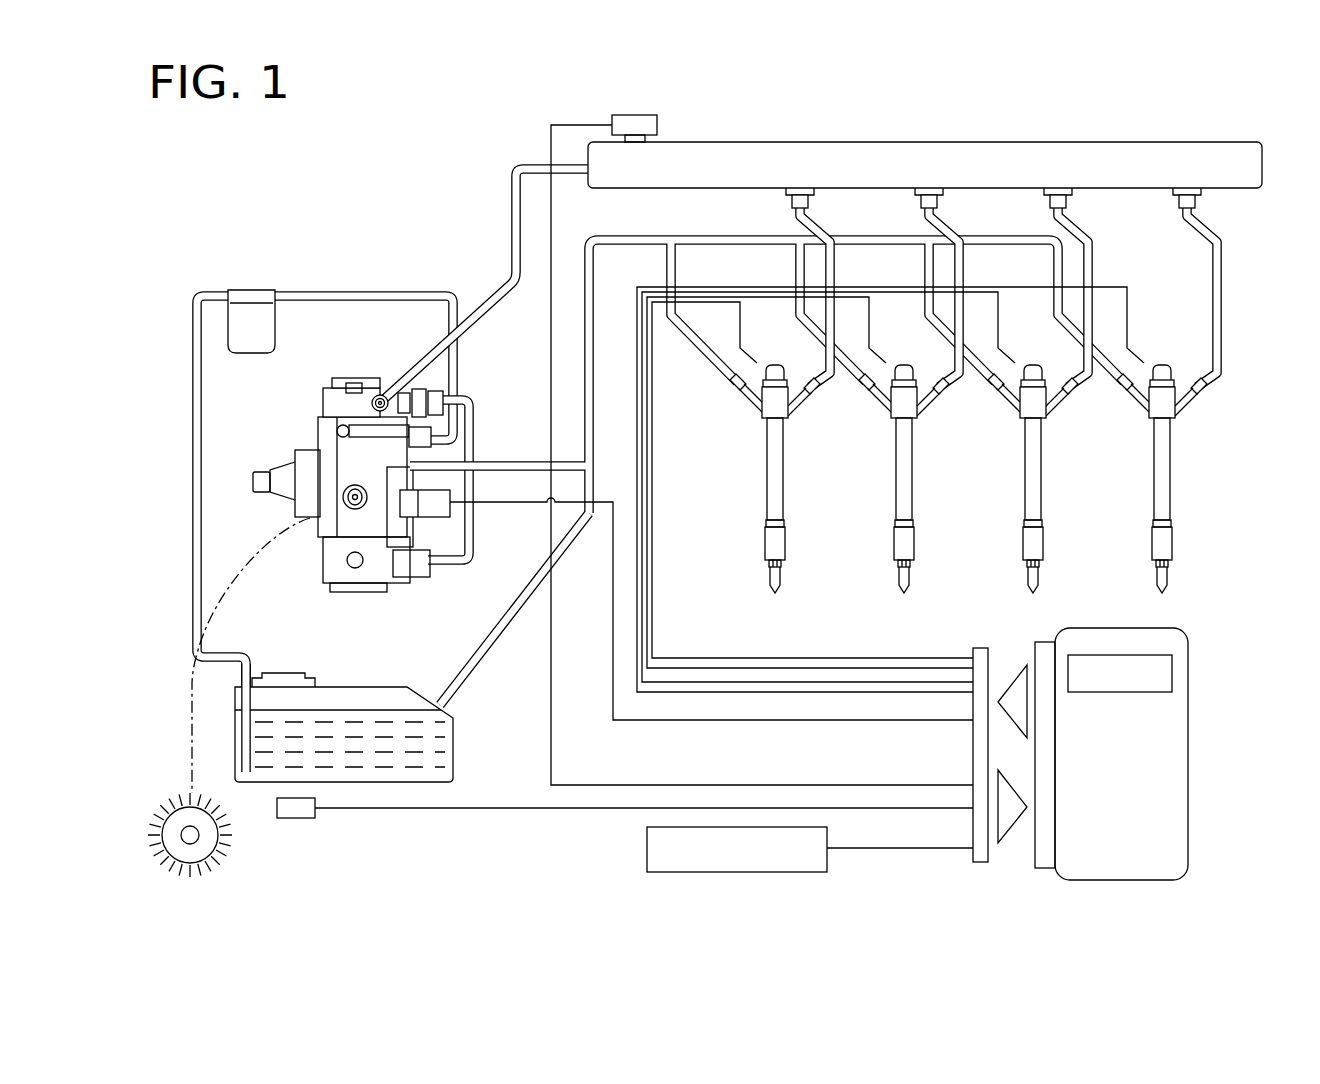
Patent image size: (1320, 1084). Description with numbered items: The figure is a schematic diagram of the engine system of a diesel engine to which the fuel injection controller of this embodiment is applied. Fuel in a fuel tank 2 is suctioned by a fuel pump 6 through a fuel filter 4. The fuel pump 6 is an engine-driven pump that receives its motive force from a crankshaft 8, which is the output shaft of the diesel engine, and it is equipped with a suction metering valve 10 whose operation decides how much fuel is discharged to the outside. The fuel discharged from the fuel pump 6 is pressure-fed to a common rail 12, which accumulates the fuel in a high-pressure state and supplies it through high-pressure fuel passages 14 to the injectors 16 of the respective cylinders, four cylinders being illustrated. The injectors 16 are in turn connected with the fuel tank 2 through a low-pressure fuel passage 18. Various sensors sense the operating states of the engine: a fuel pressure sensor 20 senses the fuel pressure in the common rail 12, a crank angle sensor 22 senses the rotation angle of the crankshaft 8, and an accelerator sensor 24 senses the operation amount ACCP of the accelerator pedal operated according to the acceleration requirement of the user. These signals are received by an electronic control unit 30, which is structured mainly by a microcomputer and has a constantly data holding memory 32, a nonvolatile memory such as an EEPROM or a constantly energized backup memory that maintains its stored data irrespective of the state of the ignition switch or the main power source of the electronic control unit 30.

The fuel tank 2 is at (353, 688).
The fuel filter 4 is at (275, 328).
The fuel pump 6 is at (366, 376).
The crankshaft 8 is at (193, 842).
The suction metering valve 10 is at (450, 487).
The common rail 12 is at (1013, 152).
The high-pressure fuel passages 14 is at (835, 262).
The injectors 16 is at (784, 468).
The low-pressure fuel passage 18 is at (621, 236).
The fuel pressure sensor 20 is at (657, 116).
The crank angle sensor 22 is at (298, 819).
The accelerator sensor 24 is at (747, 873).
The electronic control unit 30 is at (1190, 773).
The constantly data holding memory 32 is at (1173, 672).